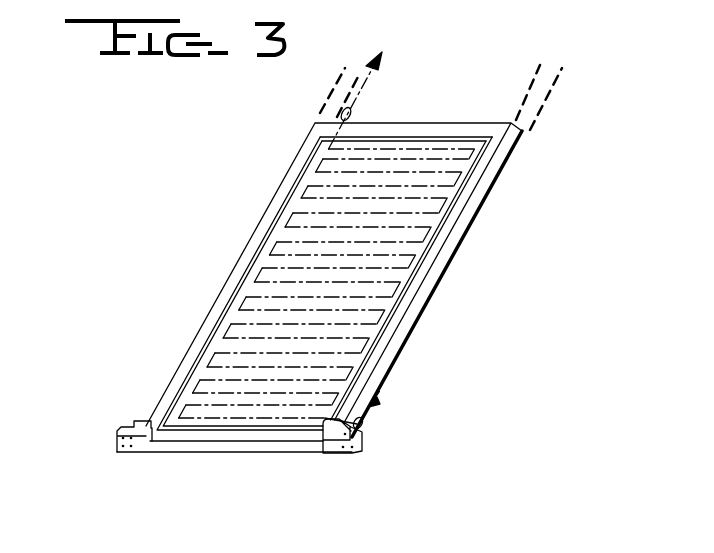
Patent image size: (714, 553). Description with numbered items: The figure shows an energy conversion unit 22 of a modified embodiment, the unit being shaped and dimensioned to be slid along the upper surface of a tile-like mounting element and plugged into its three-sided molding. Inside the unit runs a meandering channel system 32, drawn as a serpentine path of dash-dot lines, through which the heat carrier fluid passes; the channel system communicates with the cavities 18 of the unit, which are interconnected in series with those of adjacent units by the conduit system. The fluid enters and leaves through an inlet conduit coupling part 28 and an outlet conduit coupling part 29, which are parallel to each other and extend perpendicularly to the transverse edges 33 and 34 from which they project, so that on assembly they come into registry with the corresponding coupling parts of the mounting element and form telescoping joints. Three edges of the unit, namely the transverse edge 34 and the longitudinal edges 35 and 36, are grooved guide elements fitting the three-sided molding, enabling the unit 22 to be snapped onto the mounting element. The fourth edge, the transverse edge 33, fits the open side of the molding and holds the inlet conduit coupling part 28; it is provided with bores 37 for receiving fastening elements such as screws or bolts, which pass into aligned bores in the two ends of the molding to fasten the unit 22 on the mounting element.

The cavity 18 is at (368, 306).
The energy conversion unit 22 is at (236, 227).
The inlet conduit coupling part 28 is at (362, 428).
The outlet conduit coupling part 29 is at (350, 113).
The meandering channel system 32 is at (332, 297).
The transverse edge 33 is at (258, 448).
The transverse edge 34 is at (457, 132).
The longitudinal edge 35 is at (267, 218).
The longitudinal edge 36 is at (473, 191).
The bores 37 is at (125, 450).